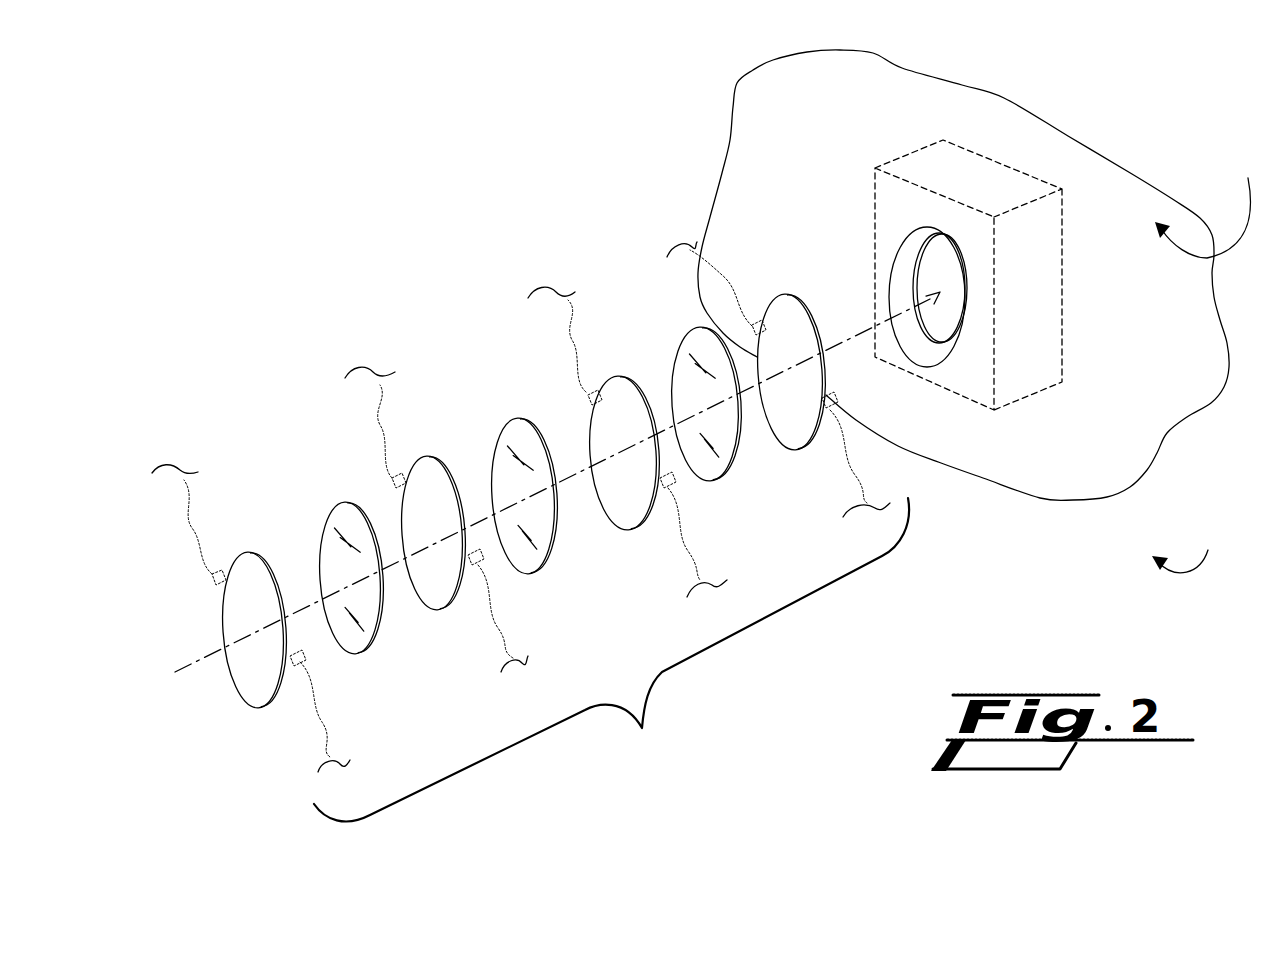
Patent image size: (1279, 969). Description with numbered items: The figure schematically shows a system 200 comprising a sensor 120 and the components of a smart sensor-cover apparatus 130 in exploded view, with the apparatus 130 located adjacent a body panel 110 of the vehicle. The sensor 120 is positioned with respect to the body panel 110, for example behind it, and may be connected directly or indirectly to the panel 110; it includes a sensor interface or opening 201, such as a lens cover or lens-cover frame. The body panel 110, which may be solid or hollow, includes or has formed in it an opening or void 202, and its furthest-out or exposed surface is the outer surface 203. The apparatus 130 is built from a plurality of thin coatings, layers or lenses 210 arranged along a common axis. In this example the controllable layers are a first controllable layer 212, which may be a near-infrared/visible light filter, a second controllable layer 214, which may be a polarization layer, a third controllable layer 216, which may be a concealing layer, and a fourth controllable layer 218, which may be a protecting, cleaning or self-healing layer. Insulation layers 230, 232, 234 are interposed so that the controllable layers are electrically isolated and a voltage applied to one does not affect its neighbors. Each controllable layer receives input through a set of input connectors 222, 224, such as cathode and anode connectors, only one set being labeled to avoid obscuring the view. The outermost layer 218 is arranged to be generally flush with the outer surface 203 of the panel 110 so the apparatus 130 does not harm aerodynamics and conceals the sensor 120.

The body panel 110 is at (750, 70).
The sensor 120 is at (1062, 345).
The smart sensor-cover apparatus 130 is at (325, 302).
The system 200 is at (1206, 544).
The sensor interface or opening 201 is at (924, 237).
The opening or void 202 is at (942, 360).
The outer surface 203 is at (1202, 199).
The layers 210 is at (611, 659).
The first controllable layer 212 is at (811, 322).
The second controllable layer 214 is at (648, 395).
The third controllable layer 216 is at (445, 462).
The fourth controllable layer 218 is at (285, 588).
The input connector 222 is at (302, 668).
The input connector 224 is at (204, 578).
The insulation layer 230 is at (752, 475).
The insulation layer 232 is at (555, 540).
The insulation layer 234 is at (382, 612).